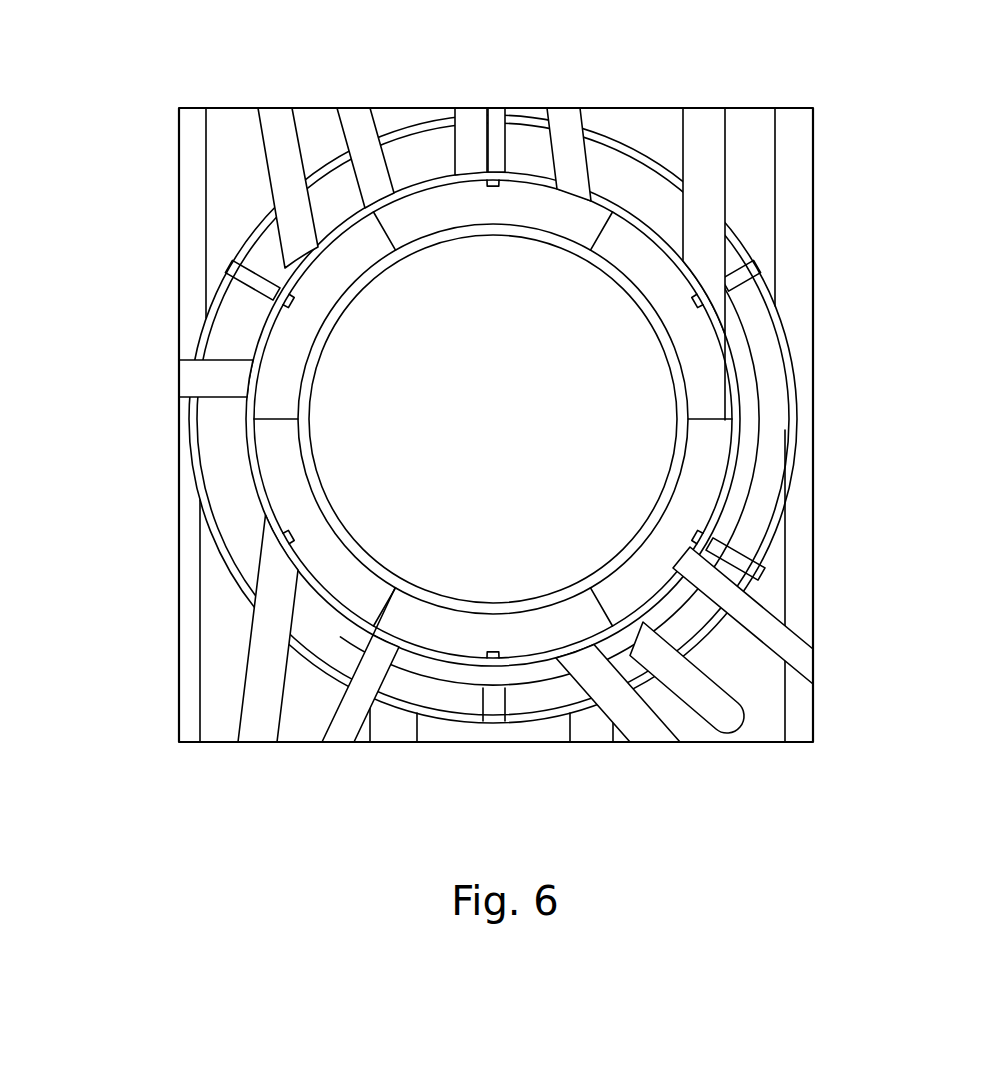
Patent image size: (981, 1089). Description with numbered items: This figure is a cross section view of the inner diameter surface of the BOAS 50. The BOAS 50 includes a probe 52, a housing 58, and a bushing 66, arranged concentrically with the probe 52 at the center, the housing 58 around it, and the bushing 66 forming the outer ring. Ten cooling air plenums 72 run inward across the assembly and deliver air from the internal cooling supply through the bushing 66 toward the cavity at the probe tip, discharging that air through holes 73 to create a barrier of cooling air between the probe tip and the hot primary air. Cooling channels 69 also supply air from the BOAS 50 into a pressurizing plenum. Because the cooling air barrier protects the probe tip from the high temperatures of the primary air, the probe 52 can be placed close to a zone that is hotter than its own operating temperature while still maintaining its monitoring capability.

The BOAS 50 is at (166, 107).
The probe 52 is at (575, 391).
The housing 58 is at (707, 461).
The bushing 66 is at (192, 496).
The cooling channels 69 is at (247, 275).
The cooling air plenums 72 is at (272, 107).
The holes 73 is at (475, 181).